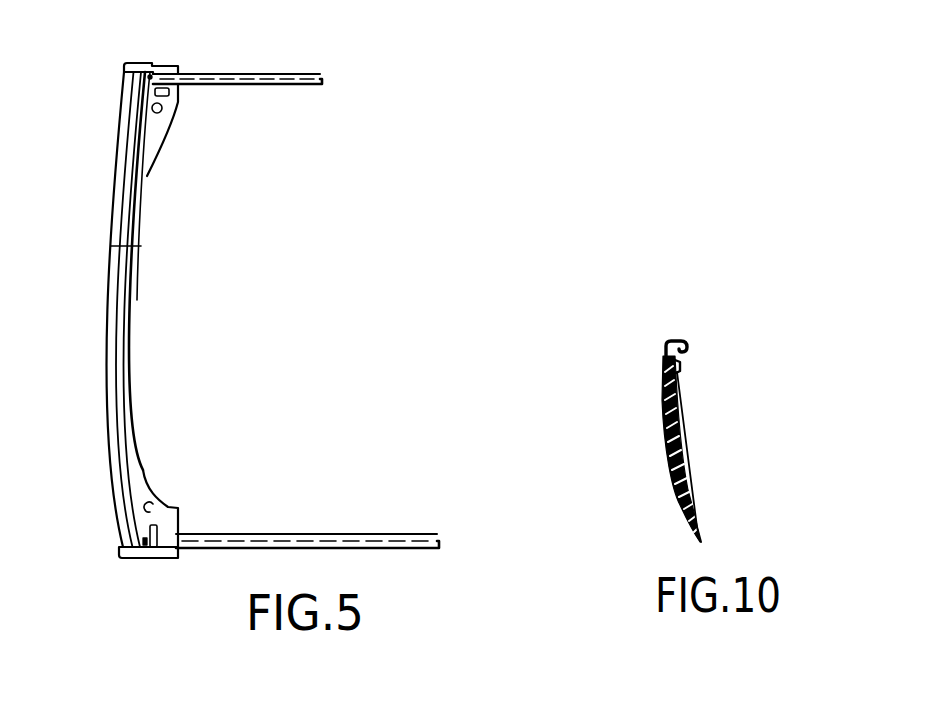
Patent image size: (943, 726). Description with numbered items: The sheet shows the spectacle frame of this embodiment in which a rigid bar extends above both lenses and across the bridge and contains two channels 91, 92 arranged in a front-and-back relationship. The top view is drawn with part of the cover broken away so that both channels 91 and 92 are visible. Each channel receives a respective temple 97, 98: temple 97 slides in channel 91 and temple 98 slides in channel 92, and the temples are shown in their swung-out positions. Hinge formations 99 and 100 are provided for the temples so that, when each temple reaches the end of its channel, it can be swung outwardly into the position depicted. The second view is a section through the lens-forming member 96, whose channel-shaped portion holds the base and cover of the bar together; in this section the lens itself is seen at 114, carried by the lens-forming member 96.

In FIG. 5, the channel 91 is at (126, 150).
In FIG. 5, the channel 92 is at (126, 180).
In FIG. 5, the temple 97 is at (298, 534).
In FIG. 5, the temple 98 is at (265, 73).
In FIG. 5, the hinge formation 99 is at (147, 556).
In FIG. 5, the hinge formation 100 is at (151, 72).
In FIG. 10, the lens-forming member 96 is at (664, 363).
In FIG. 10, the lens 114 is at (668, 460).